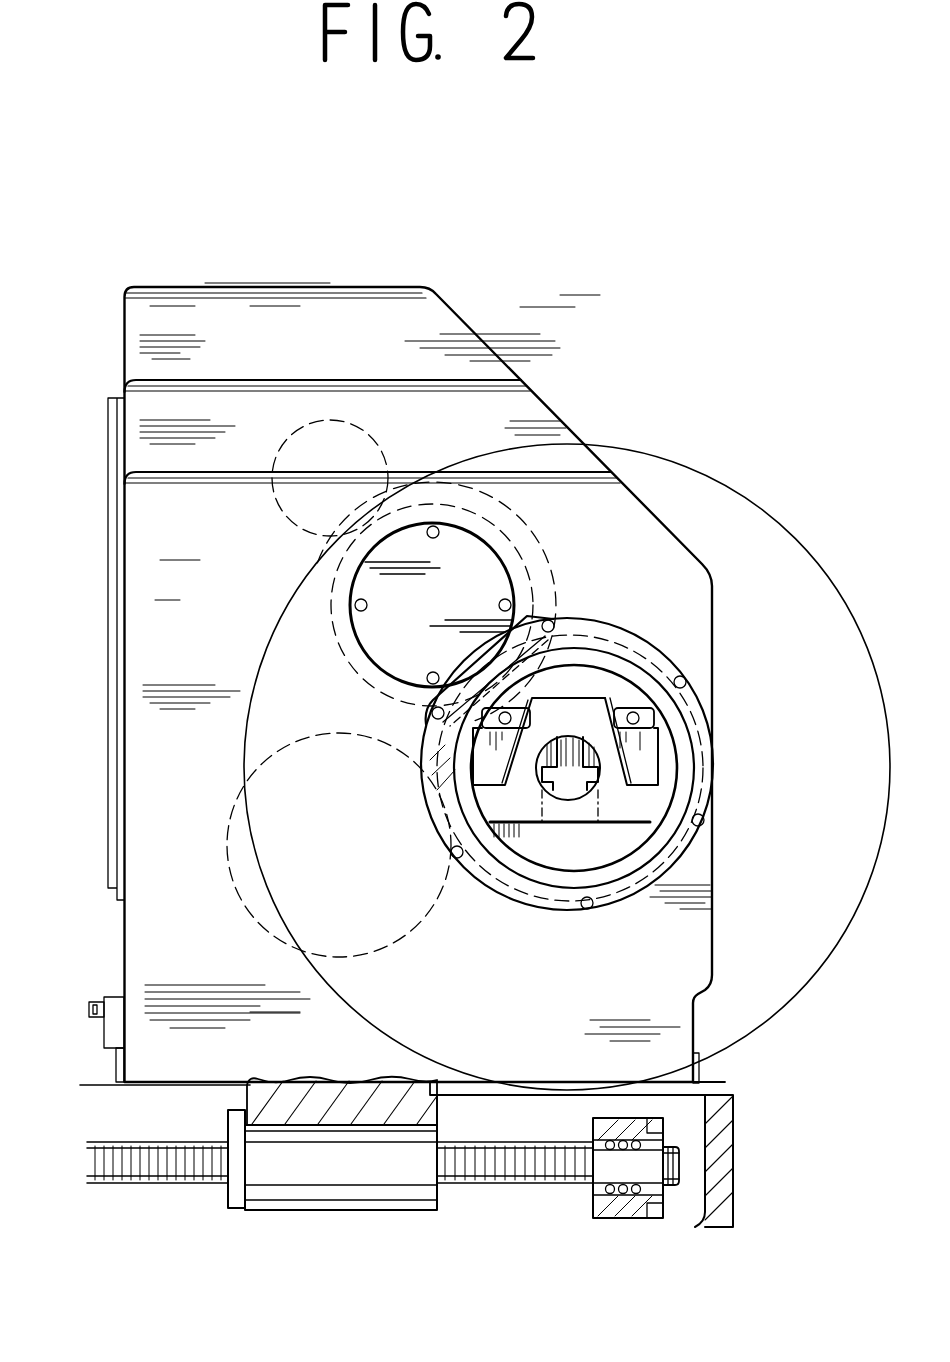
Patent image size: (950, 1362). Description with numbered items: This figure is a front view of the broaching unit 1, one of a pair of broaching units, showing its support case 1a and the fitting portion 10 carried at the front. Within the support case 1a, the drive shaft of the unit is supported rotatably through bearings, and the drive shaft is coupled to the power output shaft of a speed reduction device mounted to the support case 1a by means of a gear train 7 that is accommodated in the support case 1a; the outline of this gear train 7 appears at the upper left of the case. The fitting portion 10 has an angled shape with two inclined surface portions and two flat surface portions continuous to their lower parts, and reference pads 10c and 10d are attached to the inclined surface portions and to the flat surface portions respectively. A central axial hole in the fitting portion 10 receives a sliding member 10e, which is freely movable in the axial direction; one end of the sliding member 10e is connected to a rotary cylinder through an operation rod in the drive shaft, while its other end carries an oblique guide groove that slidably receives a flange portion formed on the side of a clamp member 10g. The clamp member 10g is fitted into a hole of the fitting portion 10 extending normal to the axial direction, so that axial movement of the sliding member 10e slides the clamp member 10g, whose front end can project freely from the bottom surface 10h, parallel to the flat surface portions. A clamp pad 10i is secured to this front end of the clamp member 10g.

The broaching unit 1 is at (385, 282).
The support case 1a is at (256, 310).
The gear train 7 is at (496, 520).
The fitting portion 10 is at (601, 764).
The reference pad 10c is at (655, 735).
The reference pad 10d is at (603, 787).
The sliding member 10e is at (594, 742).
The clamp member 10g is at (593, 785).
The bottom surface 10h is at (640, 843).
The clamp pad 10i is at (620, 830).